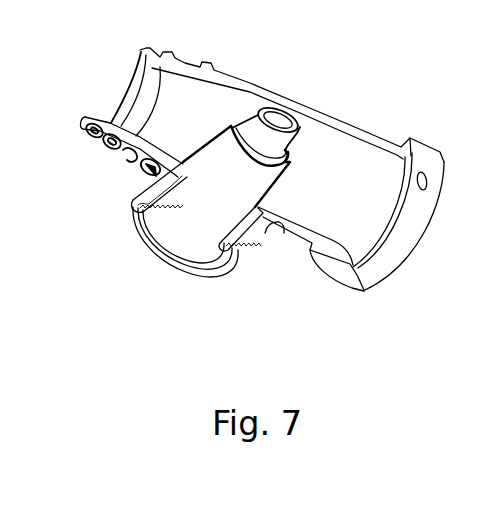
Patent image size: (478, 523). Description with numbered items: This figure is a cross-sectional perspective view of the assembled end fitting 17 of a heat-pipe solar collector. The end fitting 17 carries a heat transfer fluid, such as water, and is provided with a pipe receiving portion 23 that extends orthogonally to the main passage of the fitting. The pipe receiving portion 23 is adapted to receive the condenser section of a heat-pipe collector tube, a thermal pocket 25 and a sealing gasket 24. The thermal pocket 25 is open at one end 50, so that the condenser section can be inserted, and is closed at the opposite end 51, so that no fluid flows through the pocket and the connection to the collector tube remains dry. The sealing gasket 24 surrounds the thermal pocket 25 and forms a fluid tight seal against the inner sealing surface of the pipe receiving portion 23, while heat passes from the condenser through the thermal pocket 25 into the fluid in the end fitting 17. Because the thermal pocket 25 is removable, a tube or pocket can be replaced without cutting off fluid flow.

The end fitting 17 is at (308, 111).
The open end 50 is at (192, 230).
The closed end 51 is at (280, 117).
The thermal pocket 25 is at (163, 217).
The pipe receiving portion 23 is at (252, 235).
The sealing gasket 24 is at (232, 250).